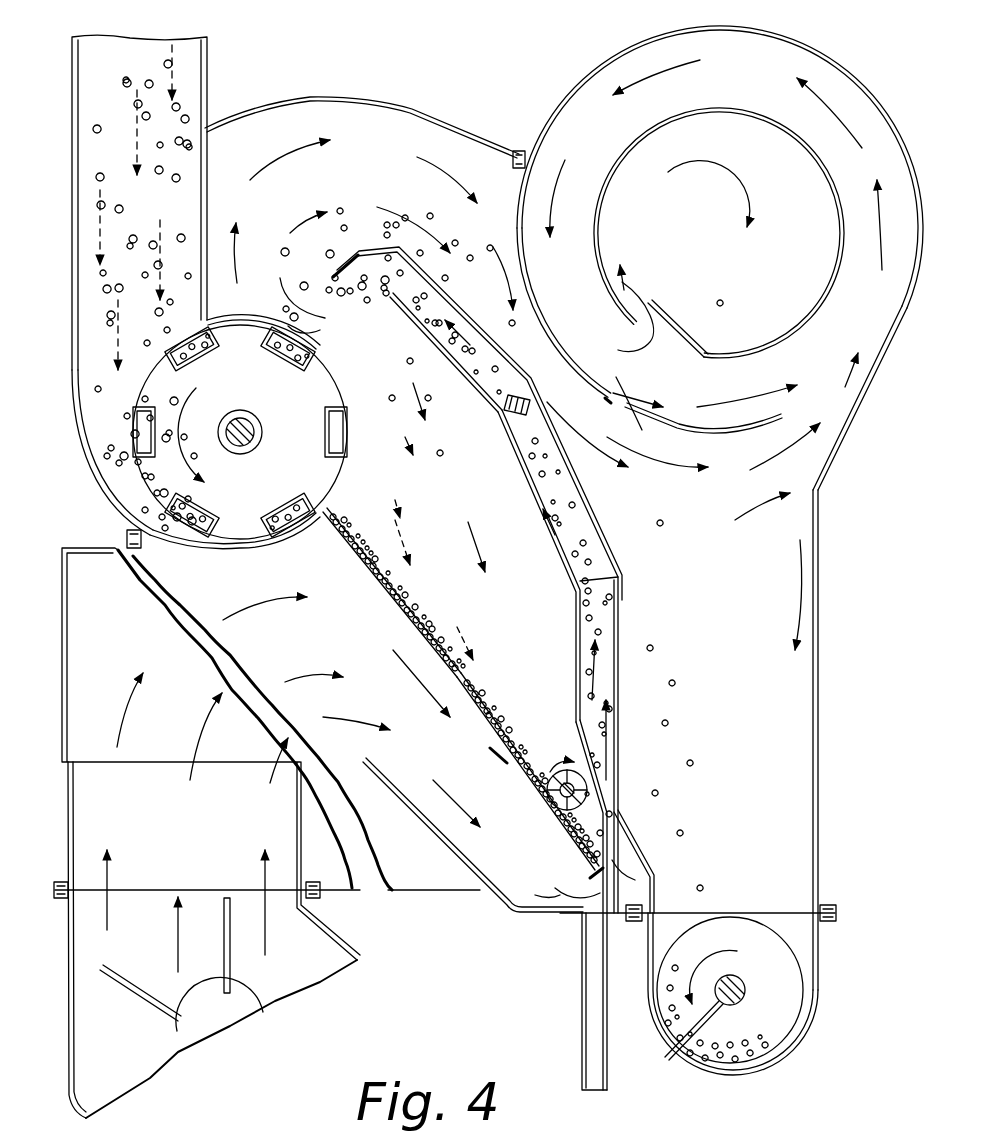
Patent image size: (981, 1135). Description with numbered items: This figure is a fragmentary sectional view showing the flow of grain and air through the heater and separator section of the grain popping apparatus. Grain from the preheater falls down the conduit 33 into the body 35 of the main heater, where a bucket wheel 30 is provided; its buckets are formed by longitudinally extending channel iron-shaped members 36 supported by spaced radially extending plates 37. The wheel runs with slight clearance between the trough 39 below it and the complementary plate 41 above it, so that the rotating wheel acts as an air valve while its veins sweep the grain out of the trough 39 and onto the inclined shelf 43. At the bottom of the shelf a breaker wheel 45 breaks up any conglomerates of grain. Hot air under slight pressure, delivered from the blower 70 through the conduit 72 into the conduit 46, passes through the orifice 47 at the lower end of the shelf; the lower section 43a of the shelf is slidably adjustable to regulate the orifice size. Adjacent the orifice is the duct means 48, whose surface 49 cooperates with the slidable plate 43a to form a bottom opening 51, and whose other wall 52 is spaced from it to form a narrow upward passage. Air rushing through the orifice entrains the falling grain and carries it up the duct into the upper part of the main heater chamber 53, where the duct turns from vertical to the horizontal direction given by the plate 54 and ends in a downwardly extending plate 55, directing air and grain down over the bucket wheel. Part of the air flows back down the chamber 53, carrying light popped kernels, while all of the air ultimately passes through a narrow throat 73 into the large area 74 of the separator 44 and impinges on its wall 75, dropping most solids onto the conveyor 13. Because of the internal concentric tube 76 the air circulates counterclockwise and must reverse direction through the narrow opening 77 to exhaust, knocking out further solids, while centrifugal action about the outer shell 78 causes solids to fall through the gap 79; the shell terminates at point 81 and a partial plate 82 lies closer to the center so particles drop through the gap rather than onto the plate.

The conveyor 13 is at (757, 913).
The bucket wheel 30 is at (254, 494).
The conduit 33 is at (208, 57).
The body 35 is at (455, 130).
The channel iron-shaped members 36 is at (276, 505).
The radially extending plates 37 is at (296, 404).
The trough 39 is at (250, 550).
The complementary plate 41 is at (228, 322).
The inclined shelf 43 is at (386, 598).
The lower section of shelf 43a is at (543, 813).
The separator 44 is at (862, 83).
The breaker wheel 45 is at (572, 775).
The conduit 46 is at (467, 870).
The orifice 47 is at (625, 868).
The duct means 48 is at (624, 630).
The surface of duct means 49 is at (580, 612).
The bottom opening 51 is at (600, 823).
The wall of duct means 52 is at (622, 592).
The main heater chamber 53 is at (374, 169).
The plate 54 is at (370, 256).
The plate 55 is at (335, 273).
The blower 70 is at (243, 1025).
The conduit 72 is at (302, 858).
The narrow throat 73 is at (553, 375).
The large area 74 is at (750, 561).
The wall 75 is at (821, 578).
The internal concentric tube 76 is at (832, 183).
The narrow opening 77 is at (655, 317).
The outer shell 78 is at (822, 47).
The gap 79 is at (628, 395).
The terminal point of outer shell 81 is at (606, 401).
The partial plate 82 is at (688, 427).